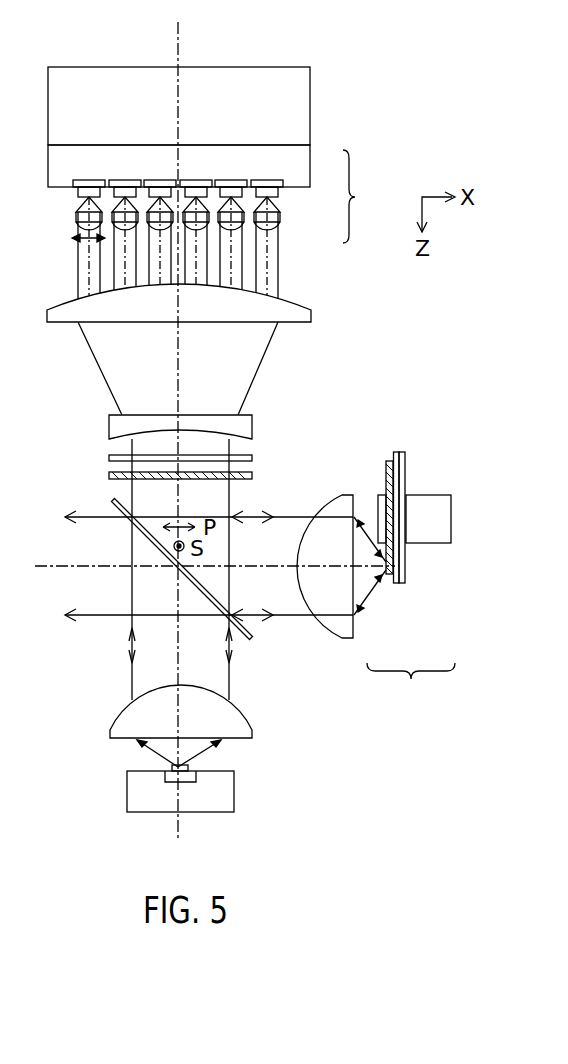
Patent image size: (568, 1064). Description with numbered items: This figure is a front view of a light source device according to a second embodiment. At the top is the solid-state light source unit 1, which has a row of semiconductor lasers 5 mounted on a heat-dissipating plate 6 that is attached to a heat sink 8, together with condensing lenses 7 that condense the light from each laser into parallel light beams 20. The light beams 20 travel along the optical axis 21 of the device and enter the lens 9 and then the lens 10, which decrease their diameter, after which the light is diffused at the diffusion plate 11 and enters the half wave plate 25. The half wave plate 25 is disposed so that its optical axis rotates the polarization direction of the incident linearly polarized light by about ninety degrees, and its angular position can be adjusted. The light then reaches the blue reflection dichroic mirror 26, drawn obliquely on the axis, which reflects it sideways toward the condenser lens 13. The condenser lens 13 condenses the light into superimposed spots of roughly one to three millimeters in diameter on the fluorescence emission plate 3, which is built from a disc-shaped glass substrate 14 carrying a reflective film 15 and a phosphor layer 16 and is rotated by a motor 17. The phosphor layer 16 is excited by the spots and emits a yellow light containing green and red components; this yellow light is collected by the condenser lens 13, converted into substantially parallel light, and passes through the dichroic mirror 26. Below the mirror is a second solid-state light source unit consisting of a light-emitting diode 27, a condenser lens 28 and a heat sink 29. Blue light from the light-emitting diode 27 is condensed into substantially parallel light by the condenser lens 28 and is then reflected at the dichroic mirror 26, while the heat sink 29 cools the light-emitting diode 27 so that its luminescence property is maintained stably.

The solid-state light source unit 1 is at (359, 196).
The fluorescence emission plate 3 is at (411, 683).
The semiconductor laser 5 is at (282, 193).
The heat-dissipating plate 6 is at (300, 165).
The condensing lens 7 is at (282, 215).
The heat sink 8 is at (300, 108).
The lens 9 is at (312, 318).
The lens 10 is at (252, 420).
The diffusion plate 11 is at (252, 458).
The condenser lens 13 is at (352, 640).
The glass substrate 14 is at (402, 588).
The reflective film 15 is at (396, 588).
The phosphor layer 16 is at (388, 578).
The motor 17 is at (420, 545).
The light beam 20 is at (280, 260).
The optical axis 21 is at (178, 838).
The half wave plate 25 is at (252, 480).
The dichroic mirror 26 is at (250, 636).
The light-emitting diode 27 is at (172, 766).
The condenser lens 28 is at (253, 735).
The heat sink 29 is at (234, 790).